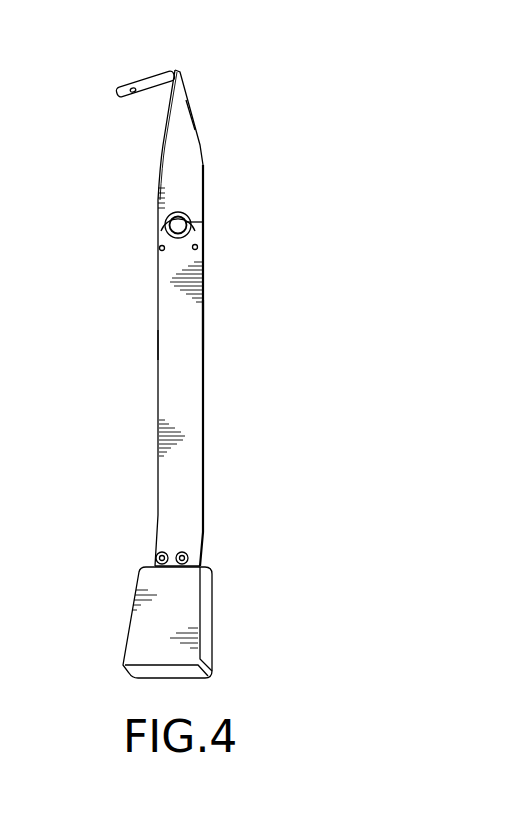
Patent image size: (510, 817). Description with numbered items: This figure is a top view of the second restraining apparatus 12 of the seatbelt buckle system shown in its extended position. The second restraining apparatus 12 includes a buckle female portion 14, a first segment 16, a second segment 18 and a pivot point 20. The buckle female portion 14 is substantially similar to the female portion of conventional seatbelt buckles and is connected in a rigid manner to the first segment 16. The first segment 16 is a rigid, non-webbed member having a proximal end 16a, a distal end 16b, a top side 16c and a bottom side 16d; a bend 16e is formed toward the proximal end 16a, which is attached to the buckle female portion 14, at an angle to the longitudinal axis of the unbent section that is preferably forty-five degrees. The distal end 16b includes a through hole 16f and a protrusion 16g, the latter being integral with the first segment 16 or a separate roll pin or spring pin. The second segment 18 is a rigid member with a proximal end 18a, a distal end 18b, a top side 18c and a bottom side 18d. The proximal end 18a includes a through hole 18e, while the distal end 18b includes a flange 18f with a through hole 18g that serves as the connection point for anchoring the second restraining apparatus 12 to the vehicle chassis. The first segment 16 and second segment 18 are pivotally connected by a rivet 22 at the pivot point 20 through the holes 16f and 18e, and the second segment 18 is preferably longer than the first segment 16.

The second restraining apparatus 12 is at (232, 375).
The buckle female portion 14 is at (210, 628).
The first segment 16 is at (205, 470).
The proximal end 16a is at (158, 515).
The distal end 16b is at (203, 260).
The top side 16c is at (177, 345).
The bottom side 16d is at (203, 325).
The bend 16e is at (203, 532).
The through hole 16f is at (203, 198).
The protrusion 16g is at (203, 243).
The second segment 18 is at (203, 143).
The proximal end 18a is at (203, 182).
The distal end 18b is at (160, 128).
The top side 18c is at (187, 173).
The bottom side 18d is at (167, 105).
The through hole 18e is at (160, 233).
The flange 18f is at (160, 70).
The through hole 18g is at (132, 86).
The pivot point 20 is at (173, 225).
The rivet 22 is at (195, 216).